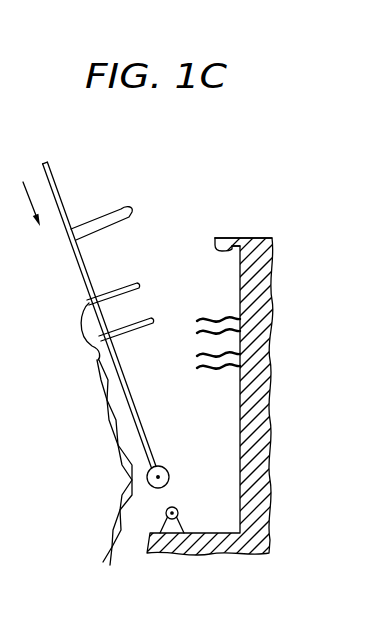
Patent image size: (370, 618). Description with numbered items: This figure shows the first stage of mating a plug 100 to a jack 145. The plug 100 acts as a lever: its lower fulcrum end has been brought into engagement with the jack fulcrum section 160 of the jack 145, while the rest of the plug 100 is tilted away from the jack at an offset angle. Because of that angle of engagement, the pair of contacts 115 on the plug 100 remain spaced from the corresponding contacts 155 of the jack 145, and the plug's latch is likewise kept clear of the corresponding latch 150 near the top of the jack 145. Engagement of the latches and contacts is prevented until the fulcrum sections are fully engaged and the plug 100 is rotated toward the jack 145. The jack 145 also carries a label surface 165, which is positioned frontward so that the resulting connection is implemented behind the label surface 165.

The plug 100 is at (55, 182).
The contacts 115 is at (133, 316).
The jack 145 is at (273, 350).
The corresponding latch 150 is at (222, 238).
The corresponding contacts 155 is at (200, 325).
The jack fulcrum section 160 is at (166, 508).
The label surface 165 is at (262, 238).